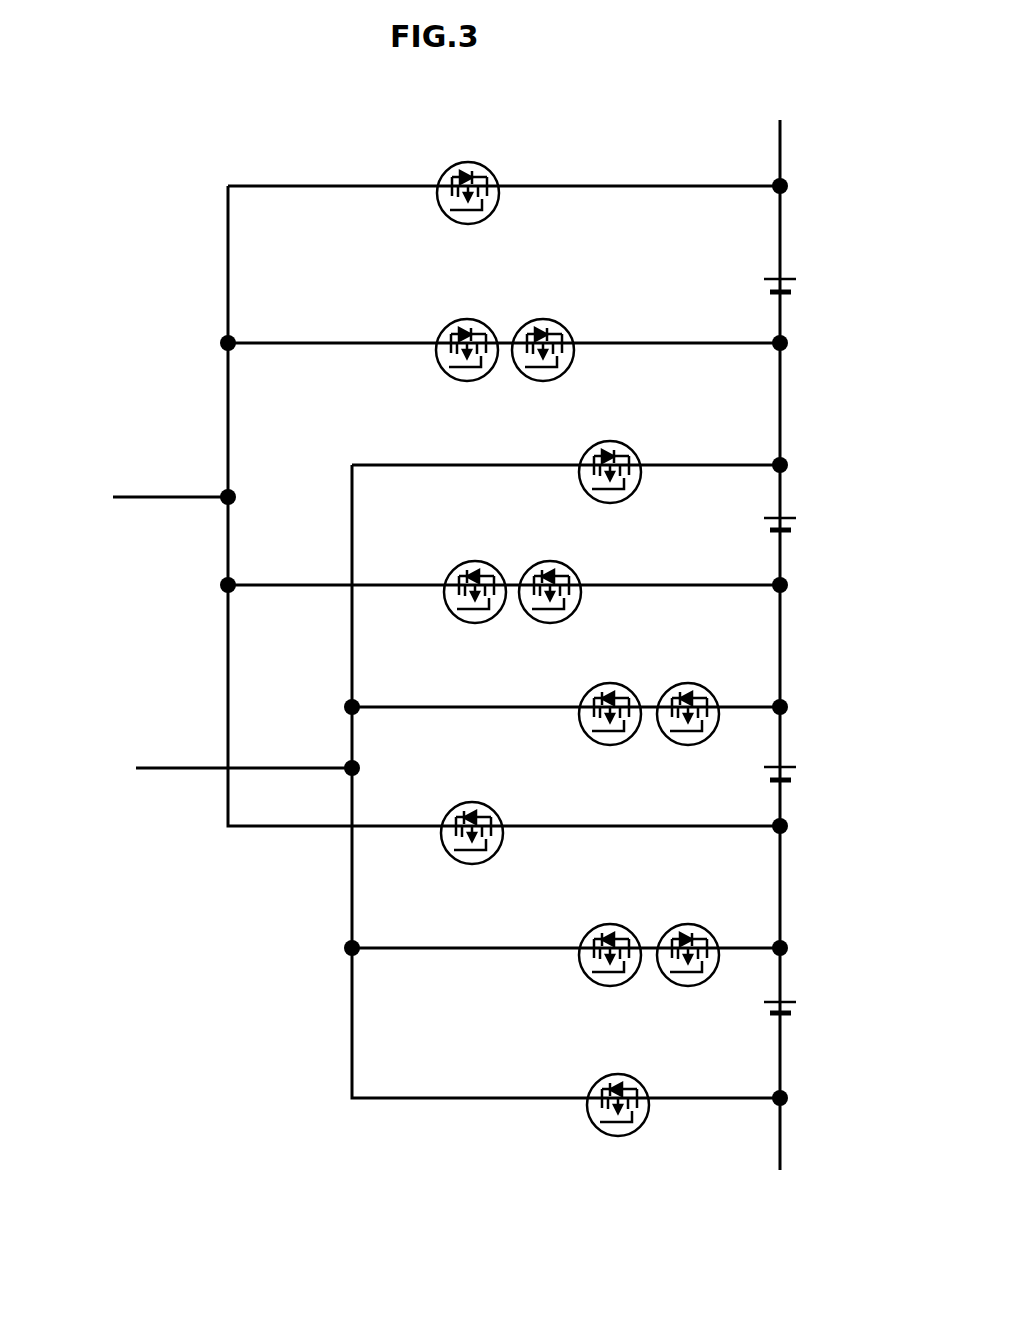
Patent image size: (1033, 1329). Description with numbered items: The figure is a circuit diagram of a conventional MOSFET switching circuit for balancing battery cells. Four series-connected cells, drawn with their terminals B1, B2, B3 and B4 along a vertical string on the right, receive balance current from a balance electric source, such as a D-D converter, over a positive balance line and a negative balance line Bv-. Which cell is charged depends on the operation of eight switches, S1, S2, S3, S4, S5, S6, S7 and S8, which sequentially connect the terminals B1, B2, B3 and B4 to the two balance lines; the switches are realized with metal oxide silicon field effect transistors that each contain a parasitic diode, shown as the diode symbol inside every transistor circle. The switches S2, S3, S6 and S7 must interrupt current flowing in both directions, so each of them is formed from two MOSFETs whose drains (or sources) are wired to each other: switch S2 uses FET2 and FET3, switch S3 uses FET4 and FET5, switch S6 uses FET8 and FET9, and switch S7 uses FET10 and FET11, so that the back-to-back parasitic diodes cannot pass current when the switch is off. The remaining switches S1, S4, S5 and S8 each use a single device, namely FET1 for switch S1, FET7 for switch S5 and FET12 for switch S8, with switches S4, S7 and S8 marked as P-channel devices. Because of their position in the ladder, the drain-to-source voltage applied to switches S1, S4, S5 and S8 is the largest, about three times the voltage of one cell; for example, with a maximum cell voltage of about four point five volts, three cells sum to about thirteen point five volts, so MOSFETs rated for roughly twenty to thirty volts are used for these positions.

The MOSFET S1 is at (636, 1087).
The MOSFET S2 is at (637, 937).
The MOSFET S3 is at (642, 692).
The MOSFET S4 is at (588, 462).
The MOSFET S5 is at (483, 813).
The MOSFET S6 is at (542, 570).
The MOSFET S7 is at (542, 330).
The MOSFET S8 is at (489, 168).
The field effect transistor FET1 is at (644, 1087).
The field effect transistor FET2 is at (607, 937).
The field effect transistor FET3 is at (702, 937).
The field effect transistor FET4 is at (624, 692).
The field effect transistor FET5 is at (662, 708).
The field effect transistor FET7 is at (494, 813).
The field effect transistor FET8 is at (495, 570).
The field effect transistor FET9 is at (583, 570).
The field effect transistor FET10 is at (510, 329).
The field effect transistor FET11 is at (606, 329).
The field effect transistor FET12 is at (511, 168).
The terminal B1 is at (807, 1008).
The terminal B2 is at (812, 785).
The terminal B3 is at (805, 517).
The terminal B4 is at (805, 292).
The negative balance line Bv- is at (191, 747).